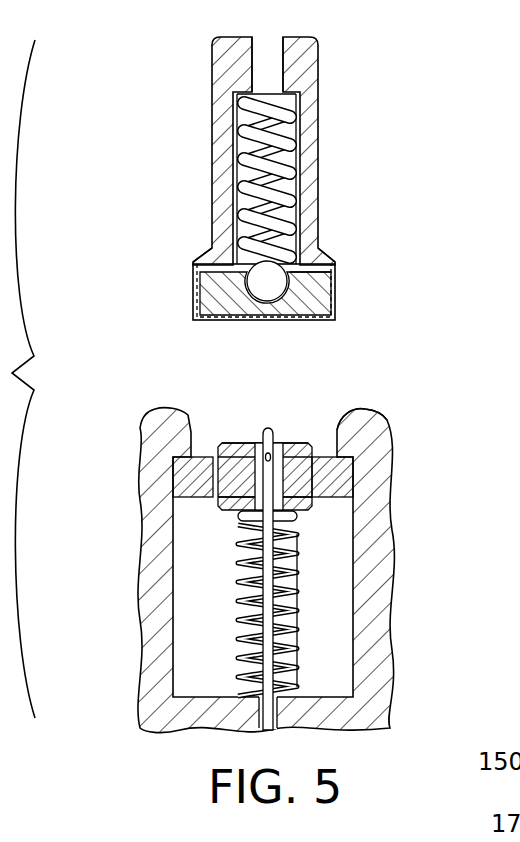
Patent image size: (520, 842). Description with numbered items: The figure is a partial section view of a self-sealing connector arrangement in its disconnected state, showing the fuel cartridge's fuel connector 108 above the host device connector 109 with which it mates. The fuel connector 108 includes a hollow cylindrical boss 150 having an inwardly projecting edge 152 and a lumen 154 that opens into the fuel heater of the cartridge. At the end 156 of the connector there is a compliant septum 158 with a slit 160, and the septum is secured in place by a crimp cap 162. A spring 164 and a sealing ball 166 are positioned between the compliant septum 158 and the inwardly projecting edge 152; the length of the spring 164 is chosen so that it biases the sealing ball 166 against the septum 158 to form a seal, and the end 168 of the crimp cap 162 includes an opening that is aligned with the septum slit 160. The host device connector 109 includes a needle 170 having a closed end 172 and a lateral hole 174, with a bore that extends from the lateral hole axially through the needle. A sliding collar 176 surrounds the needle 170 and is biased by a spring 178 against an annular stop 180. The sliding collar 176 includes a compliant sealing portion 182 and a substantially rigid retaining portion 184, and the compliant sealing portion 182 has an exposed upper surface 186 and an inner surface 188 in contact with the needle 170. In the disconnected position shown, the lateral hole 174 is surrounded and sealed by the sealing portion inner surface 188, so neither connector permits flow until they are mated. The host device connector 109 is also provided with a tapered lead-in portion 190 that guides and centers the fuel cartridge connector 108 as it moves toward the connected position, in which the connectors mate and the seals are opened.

The fuel connector 108 is at (278, 183).
The hollow cylindrical boss 150 is at (212, 122).
The inwardly projecting edge 152 is at (264, 110).
The lumen 154 is at (268, 36).
The end 156 is at (257, 293).
The compliant septum 158 is at (207, 293).
The slit 160 is at (276, 318).
The crimp cap 162 is at (325, 256).
The spring 164 is at (270, 95).
The sealing ball 166 is at (305, 292).
The end of the crimp cap 168 is at (318, 322).
The host device connector 109 is at (284, 551).
The needle 170 is at (250, 548).
The closed end 172 is at (268, 430).
The lateral hole 174 is at (263, 467).
The sliding collar 176 is at (362, 461).
The spring 178 is at (292, 550).
The annular stop 180 is at (150, 437).
The compliant sealing portion 182 is at (300, 508).
The substantially rigid retaining portion 184 is at (320, 497).
The exposed upper surface 186 is at (261, 445).
The inner surface 188 is at (173, 480).
The tapered lead-in portion 190 is at (338, 427).